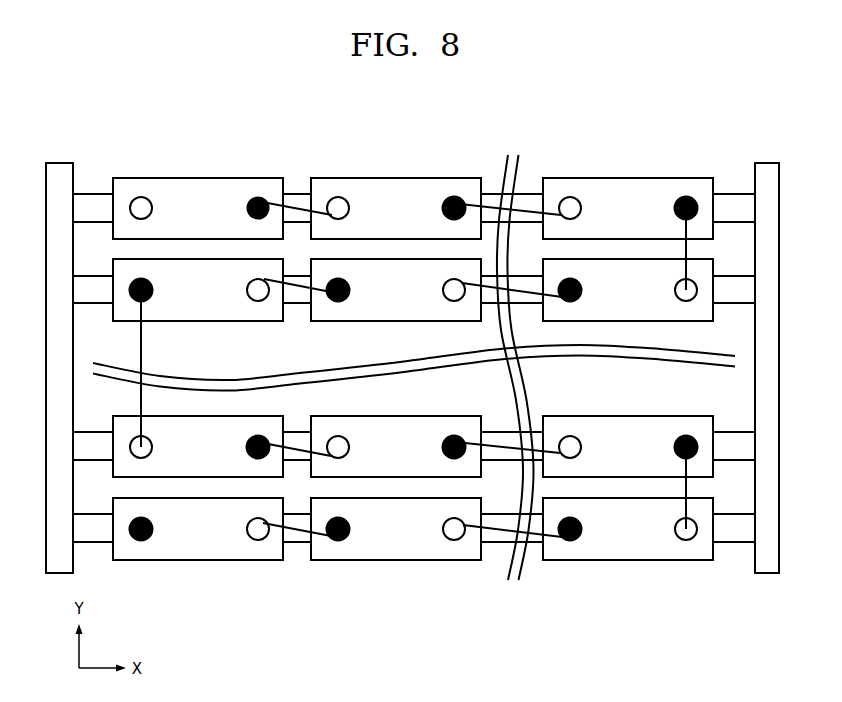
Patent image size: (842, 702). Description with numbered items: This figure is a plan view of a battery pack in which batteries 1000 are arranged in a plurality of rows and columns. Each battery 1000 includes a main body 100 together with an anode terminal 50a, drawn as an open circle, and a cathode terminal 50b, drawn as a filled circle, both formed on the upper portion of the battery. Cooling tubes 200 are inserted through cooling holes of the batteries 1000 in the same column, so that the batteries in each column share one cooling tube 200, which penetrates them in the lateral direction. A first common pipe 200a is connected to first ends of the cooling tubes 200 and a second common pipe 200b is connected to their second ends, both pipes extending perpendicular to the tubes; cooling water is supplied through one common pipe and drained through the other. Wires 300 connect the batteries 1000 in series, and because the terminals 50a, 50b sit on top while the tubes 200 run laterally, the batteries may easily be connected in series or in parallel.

The battery 1000 is at (133, 121).
The main body 100 is at (200, 183).
The anode terminal 50a is at (141, 197).
The cathode terminal 50b is at (257, 197).
The cooling tube 200 is at (300, 196).
The first common pipe 200a is at (62, 170).
The second common pipe 200b is at (767, 170).
The wire 300 is at (473, 203).